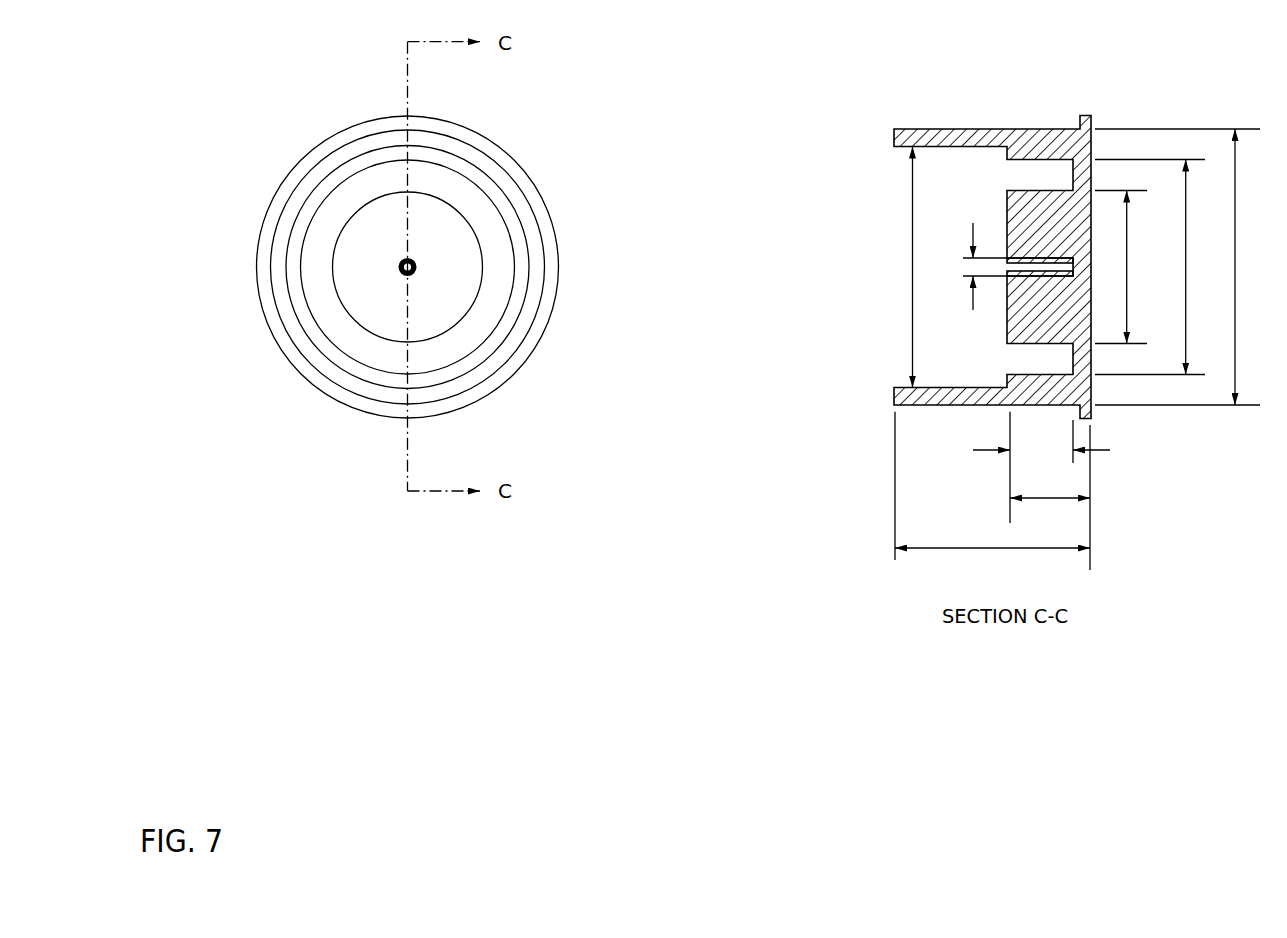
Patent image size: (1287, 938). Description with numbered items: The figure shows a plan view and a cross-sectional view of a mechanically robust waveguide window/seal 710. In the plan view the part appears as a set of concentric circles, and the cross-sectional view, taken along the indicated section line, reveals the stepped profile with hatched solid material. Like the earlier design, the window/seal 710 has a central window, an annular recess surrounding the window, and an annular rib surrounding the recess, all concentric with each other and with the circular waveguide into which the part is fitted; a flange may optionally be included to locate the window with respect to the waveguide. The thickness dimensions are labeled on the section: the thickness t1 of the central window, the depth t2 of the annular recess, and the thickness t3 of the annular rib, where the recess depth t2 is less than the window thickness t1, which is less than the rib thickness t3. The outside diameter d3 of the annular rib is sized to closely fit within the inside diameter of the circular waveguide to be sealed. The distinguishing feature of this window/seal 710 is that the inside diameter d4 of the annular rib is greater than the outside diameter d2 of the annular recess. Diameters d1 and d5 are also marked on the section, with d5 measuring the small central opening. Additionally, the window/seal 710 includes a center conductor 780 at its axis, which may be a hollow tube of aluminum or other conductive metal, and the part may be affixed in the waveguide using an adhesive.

The waveguide window/seal 710 is at (261, 308).
The center conductor 780 is at (408, 267).
The diameter d1 is at (1121, 267).
The outside diameter of the annular recess d2 is at (1150, 267).
The outside diameter of the annular rib d3 is at (1177, 267).
The inside diameter of the annular rib d4 is at (912, 267).
The diameter d5 is at (985, 280).
The thickness of the central window t1 is at (1050, 467).
The depth of the annular recess t2 is at (1041, 441).
The thickness of the annular rib t3 is at (992, 491).